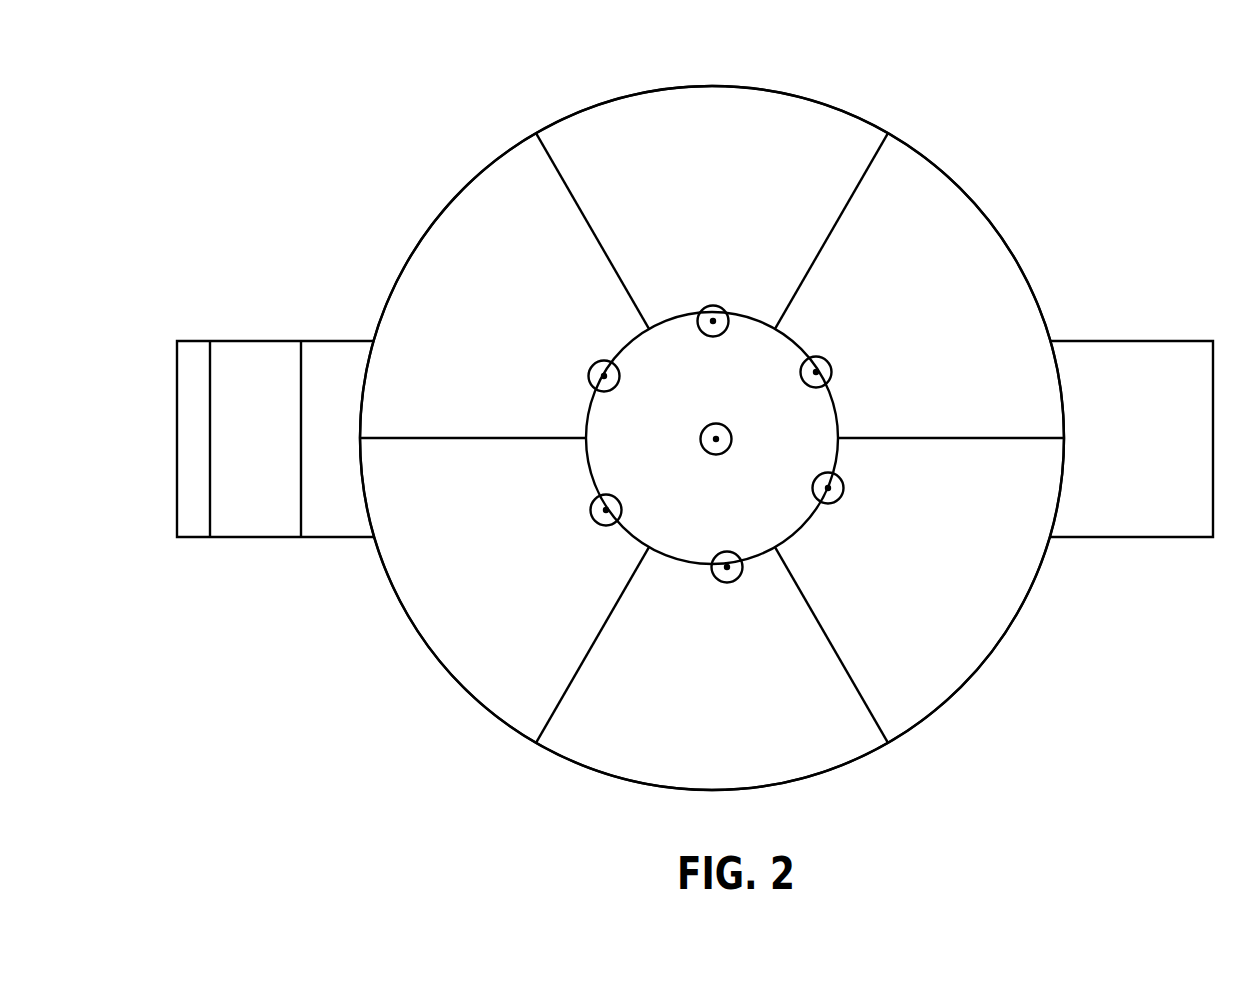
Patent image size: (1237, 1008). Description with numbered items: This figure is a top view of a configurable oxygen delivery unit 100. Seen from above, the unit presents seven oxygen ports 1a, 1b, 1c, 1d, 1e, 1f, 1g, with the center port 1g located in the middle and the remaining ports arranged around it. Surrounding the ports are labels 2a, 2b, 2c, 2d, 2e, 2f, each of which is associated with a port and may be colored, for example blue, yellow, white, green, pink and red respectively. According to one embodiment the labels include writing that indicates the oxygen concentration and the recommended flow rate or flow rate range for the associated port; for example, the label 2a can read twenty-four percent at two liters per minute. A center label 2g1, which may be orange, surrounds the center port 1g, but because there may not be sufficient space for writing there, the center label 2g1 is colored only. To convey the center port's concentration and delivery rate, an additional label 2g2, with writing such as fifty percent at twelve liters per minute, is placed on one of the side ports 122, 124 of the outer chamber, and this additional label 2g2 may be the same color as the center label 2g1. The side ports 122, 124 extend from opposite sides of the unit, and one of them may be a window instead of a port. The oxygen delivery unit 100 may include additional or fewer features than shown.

The configurable oxygen delivery unit 100 is at (922, 150).
The side port 122 is at (275, 499).
The side port 124 is at (1123, 538).
The oxygen port 1a is at (591, 507).
The oxygen port 1b is at (588, 370).
The oxygen port 1c is at (713, 305).
The oxygen port 1d is at (829, 363).
The oxygen port 1e is at (832, 503).
The oxygen port 1f is at (733, 582).
The center port 1g is at (722, 424).
The label 2a is at (504, 590).
The label 2b is at (473, 285).
The label 2c is at (712, 207).
The label 2d is at (976, 285).
The label 2e is at (951, 590).
The label 2f is at (712, 668).
The center label 2g1 is at (706, 434).
The additional label 2g2 is at (271, 439).